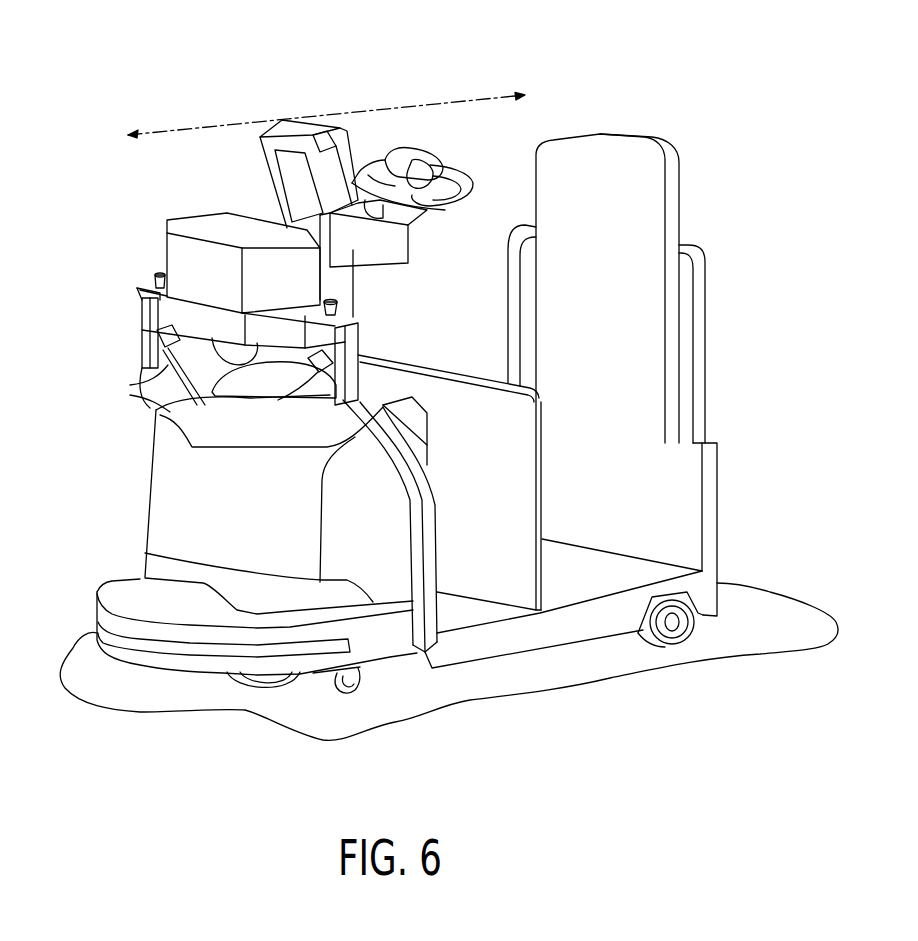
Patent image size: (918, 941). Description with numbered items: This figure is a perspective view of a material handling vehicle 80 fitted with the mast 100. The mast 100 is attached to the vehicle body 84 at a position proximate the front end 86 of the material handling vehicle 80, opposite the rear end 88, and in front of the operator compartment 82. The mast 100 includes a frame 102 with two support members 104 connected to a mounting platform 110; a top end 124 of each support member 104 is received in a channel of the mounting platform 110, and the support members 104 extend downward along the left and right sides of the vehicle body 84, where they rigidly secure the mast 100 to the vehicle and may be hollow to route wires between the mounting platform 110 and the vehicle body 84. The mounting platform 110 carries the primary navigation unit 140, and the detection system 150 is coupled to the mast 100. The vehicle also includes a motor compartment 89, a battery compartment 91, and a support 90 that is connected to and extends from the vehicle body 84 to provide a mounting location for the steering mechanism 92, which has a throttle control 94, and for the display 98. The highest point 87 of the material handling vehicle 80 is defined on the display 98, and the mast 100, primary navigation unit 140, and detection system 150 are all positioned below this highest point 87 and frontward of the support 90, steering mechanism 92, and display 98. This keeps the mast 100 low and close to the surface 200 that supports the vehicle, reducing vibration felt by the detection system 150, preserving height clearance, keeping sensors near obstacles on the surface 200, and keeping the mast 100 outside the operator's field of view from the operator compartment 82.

The material handling vehicle 80 is at (222, 68).
The operator compartment 82 is at (634, 480).
The vehicle body 84 is at (165, 483).
The front end 86 is at (73, 563).
The highest point 87 is at (303, 118).
The rear end 88 is at (740, 517).
The motor compartment 89 is at (367, 557).
The support 90 is at (399, 265).
The battery compartment 91 is at (483, 581).
The steering mechanism 92 is at (447, 216).
The throttle control 94 is at (410, 148).
The display 98 is at (262, 176).
The mast 100 is at (140, 297).
The frame 102 is at (385, 405).
The support members 104 is at (142, 343).
The mounting platform 110 is at (148, 283).
The top end 124 is at (433, 515).
The primary navigation unit 140 is at (203, 222).
The detection system 150 is at (211, 368).
The surface 200 is at (538, 666).